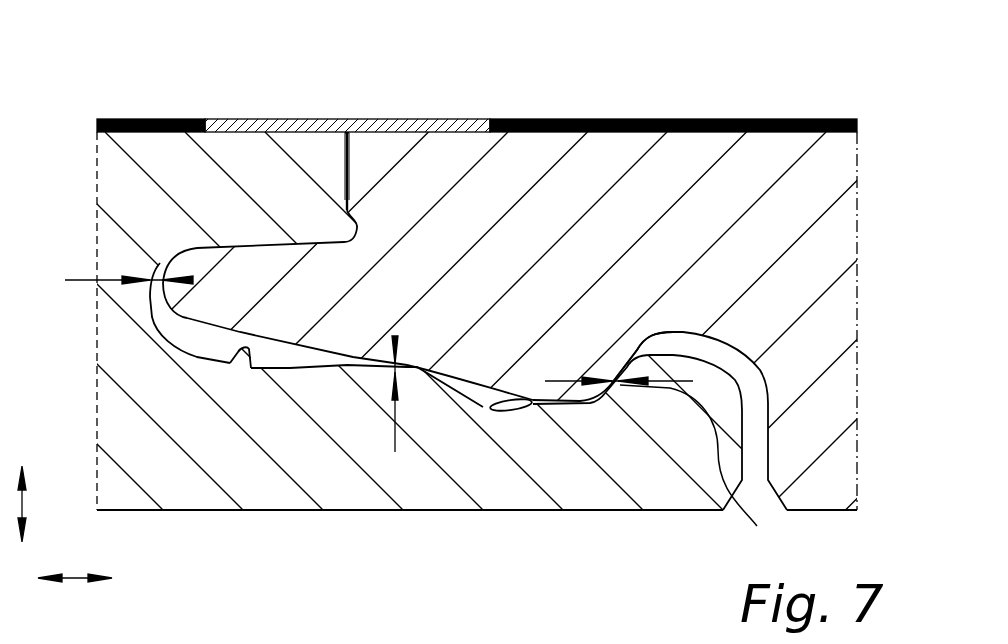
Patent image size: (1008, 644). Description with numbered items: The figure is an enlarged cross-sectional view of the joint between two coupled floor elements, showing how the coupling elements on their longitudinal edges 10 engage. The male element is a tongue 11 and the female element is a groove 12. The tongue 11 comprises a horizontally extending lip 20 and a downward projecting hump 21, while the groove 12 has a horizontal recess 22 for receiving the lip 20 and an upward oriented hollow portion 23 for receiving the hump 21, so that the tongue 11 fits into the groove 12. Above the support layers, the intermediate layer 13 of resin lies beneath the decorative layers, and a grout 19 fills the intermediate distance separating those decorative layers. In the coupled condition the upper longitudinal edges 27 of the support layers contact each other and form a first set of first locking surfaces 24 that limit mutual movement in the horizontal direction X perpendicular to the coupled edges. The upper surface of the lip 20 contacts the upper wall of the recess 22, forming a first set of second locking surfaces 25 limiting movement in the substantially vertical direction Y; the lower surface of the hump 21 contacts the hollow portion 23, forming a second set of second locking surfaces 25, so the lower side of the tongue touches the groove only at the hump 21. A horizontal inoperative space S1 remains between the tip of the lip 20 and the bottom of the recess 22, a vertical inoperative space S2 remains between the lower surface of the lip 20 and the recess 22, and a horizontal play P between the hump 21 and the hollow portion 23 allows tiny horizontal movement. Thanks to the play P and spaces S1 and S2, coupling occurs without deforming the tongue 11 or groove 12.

The longitudinal edge 10 is at (311, 548).
The tongue 11 is at (576, 183).
The groove 12 is at (314, 382).
The intermediate layer 13 is at (197, 118).
The grout 19 is at (440, 119).
The lip 20 is at (160, 263).
The downward projecting hump 21 is at (582, 364).
The horizontal recess 22 is at (247, 349).
The hollow portion 23 is at (490, 410).
The first locking surfaces 24 is at (347, 135).
The second locking surfaces 25 is at (243, 244).
The upper longitudinal edges 27 is at (347, 155).
The horizontal play P is at (698, 466).
The horizontal inoperative space S1 is at (80, 283).
The vertical inoperative space S2 is at (395, 452).
The horizontal direction X is at (75, 578).
The vertical direction Y is at (25, 500).